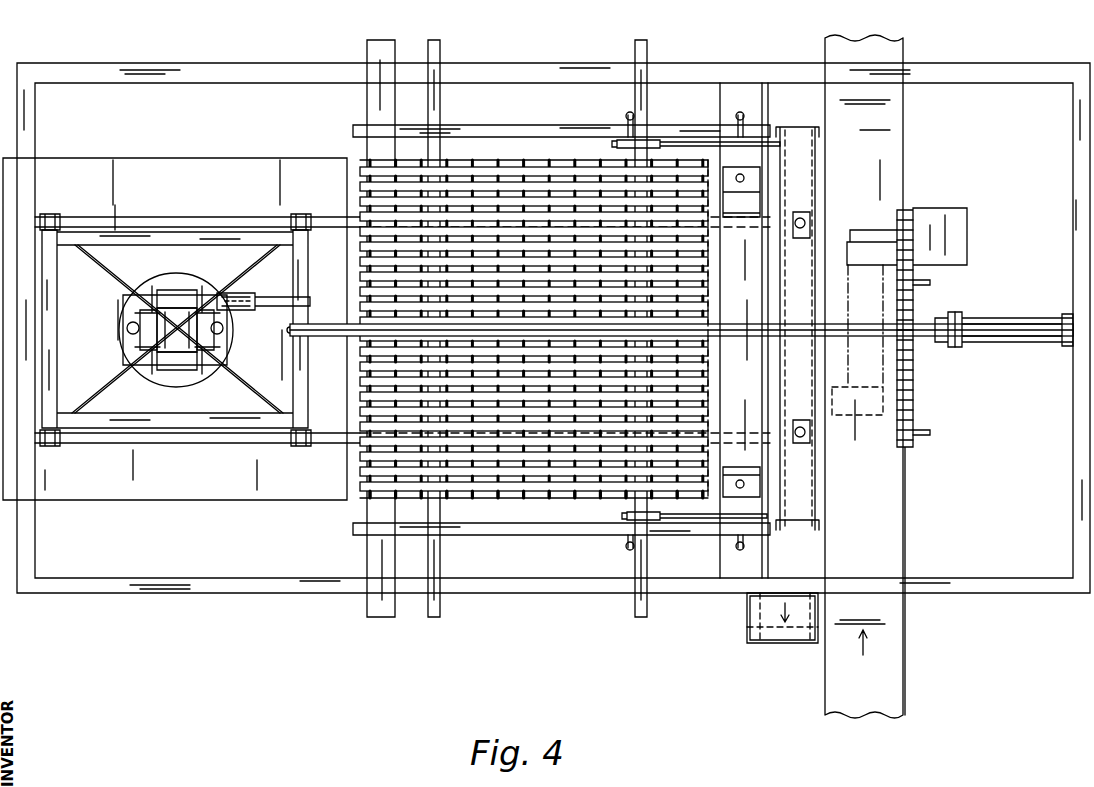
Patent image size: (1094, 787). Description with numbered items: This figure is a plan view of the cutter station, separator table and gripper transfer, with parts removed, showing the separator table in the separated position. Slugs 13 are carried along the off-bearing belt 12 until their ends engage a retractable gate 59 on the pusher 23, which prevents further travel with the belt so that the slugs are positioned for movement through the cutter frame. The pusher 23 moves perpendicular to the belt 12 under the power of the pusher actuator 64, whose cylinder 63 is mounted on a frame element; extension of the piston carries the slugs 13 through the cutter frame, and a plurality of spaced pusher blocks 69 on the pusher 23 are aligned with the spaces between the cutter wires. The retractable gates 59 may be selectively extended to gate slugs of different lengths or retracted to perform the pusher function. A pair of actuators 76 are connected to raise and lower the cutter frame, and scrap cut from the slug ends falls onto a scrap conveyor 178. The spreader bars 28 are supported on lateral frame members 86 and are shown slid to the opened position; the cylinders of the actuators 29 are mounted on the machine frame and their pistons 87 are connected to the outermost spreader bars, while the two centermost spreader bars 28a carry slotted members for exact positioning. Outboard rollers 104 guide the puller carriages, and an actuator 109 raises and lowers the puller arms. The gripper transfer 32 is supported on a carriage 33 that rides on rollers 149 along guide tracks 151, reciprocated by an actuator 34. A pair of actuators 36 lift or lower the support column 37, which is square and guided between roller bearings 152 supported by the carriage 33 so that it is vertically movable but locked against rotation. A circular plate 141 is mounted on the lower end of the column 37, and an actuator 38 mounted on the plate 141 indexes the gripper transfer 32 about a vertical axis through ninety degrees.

The off-bearing belt 12 is at (893, 516).
The slugs 13 is at (840, 440).
The pusher 23 is at (922, 392).
The spreader bars 28 is at (375, 288).
The centermost spreader bars 28a is at (375, 344).
The actuators 29 is at (648, 63).
The gripper transfer 32 is at (185, 500).
The carriage 33 is at (155, 226).
The actuator 34 is at (862, 323).
The actuators 36 is at (125, 328).
The support column 37 is at (185, 375).
The actuator 38 is at (275, 298).
The retractable gate 59 is at (868, 235).
The cylinder 63 is at (1000, 316).
The pusher actuator 64 is at (998, 343).
The pusher blocks 69 is at (920, 296).
The actuators 76 is at (805, 218).
The lateral frame members 86 is at (500, 498).
The pistons 87 is at (441, 153).
The outboard rollers 104 is at (628, 118).
The actuator 109 is at (655, 135).
The circular plate 141 is at (192, 290).
The rollers 149 is at (52, 214).
The guide tracks 151 is at (236, 216).
The roller bearings 152 is at (163, 290).
The scrap conveyor 178 is at (779, 645).